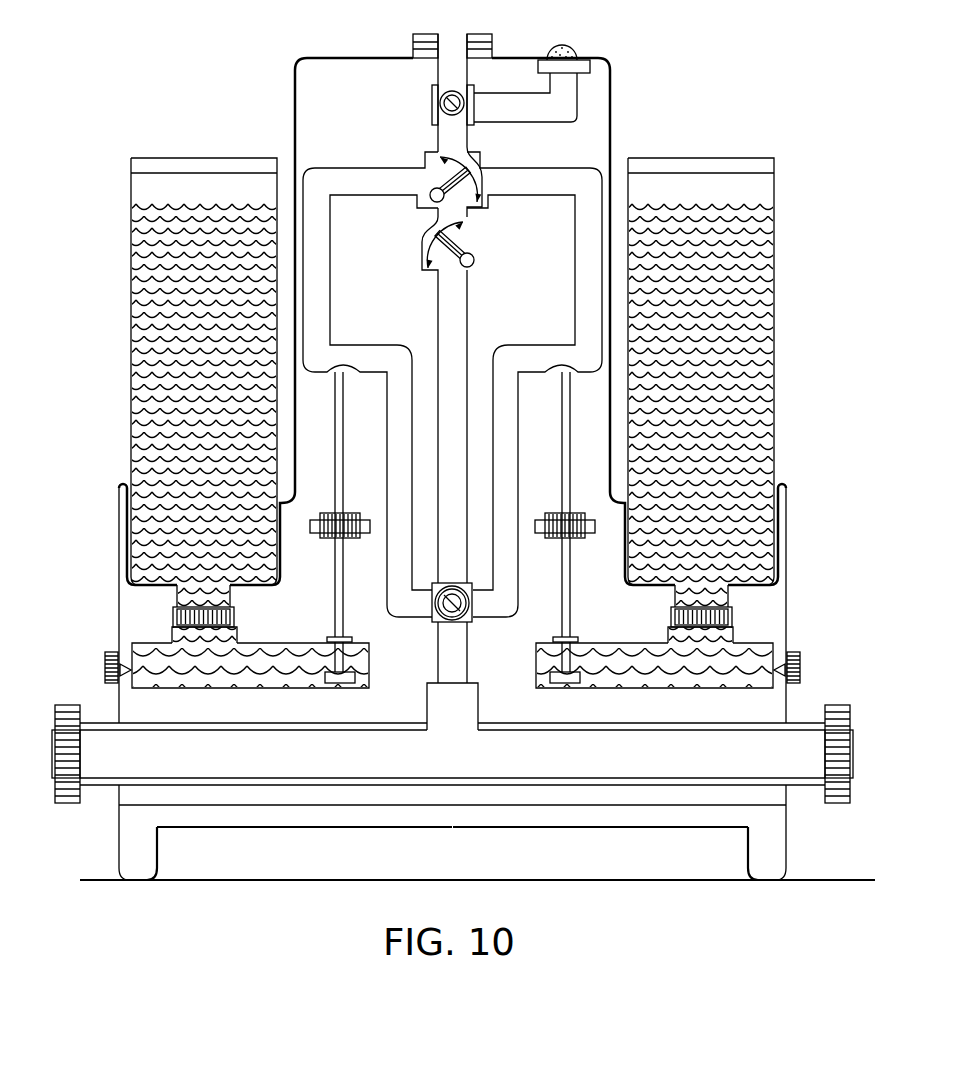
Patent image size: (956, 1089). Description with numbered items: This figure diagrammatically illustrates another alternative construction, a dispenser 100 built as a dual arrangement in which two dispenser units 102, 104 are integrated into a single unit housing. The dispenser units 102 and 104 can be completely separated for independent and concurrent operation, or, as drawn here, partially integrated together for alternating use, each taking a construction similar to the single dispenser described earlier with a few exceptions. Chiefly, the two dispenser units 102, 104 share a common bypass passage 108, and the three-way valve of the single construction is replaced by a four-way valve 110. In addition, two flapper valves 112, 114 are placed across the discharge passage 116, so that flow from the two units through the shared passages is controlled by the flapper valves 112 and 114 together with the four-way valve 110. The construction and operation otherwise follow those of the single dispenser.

The dispenser 100 is at (112, 192).
The dispenser unit 102 is at (110, 403).
The dispenser unit 104 is at (785, 197).
The common bypass passage 108 is at (457, 312).
The four-way valve 110 is at (463, 610).
The flapper valve 112 is at (478, 184).
The flapper valve 114 is at (450, 242).
The discharge passage 116 is at (450, 137).